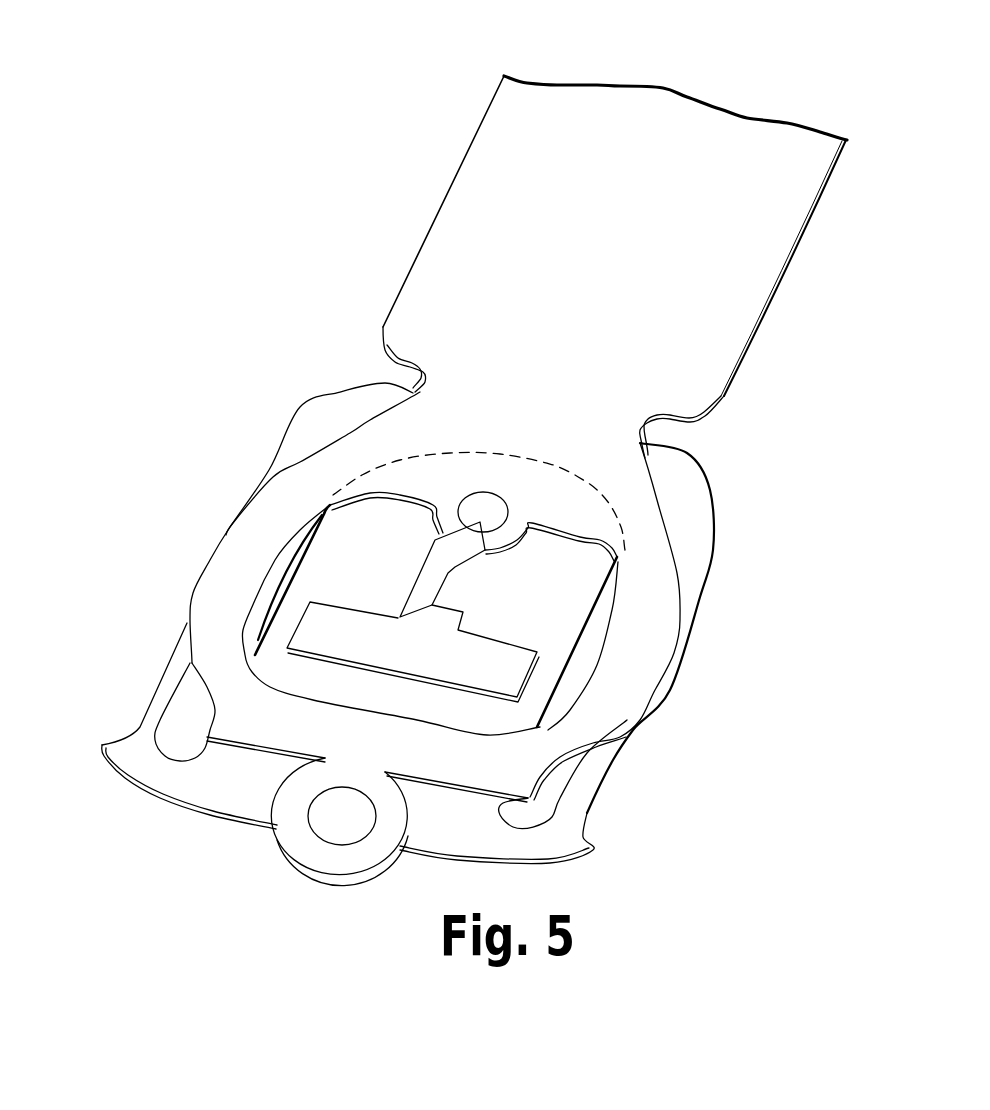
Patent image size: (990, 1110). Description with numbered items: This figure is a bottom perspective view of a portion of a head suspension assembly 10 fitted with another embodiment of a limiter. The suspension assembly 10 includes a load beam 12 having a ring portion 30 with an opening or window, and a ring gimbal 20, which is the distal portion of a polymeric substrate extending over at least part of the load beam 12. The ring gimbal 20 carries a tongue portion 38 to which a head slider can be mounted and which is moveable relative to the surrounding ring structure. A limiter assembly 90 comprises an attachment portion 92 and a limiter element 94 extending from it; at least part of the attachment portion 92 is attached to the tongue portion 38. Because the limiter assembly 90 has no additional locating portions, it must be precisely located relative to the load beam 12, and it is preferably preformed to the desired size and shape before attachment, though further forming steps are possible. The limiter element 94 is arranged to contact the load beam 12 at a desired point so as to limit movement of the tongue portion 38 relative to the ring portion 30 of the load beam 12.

The suspension assembly 10 is at (893, 348).
The load beam 12 is at (778, 250).
The ring gimbal 20 is at (582, 838).
The ring portion 30 is at (213, 623).
The tongue portion 38 is at (565, 612).
The limiter assembly 90 is at (447, 675).
The attachment portion 92 is at (507, 675).
The limiter element 94 is at (433, 585).